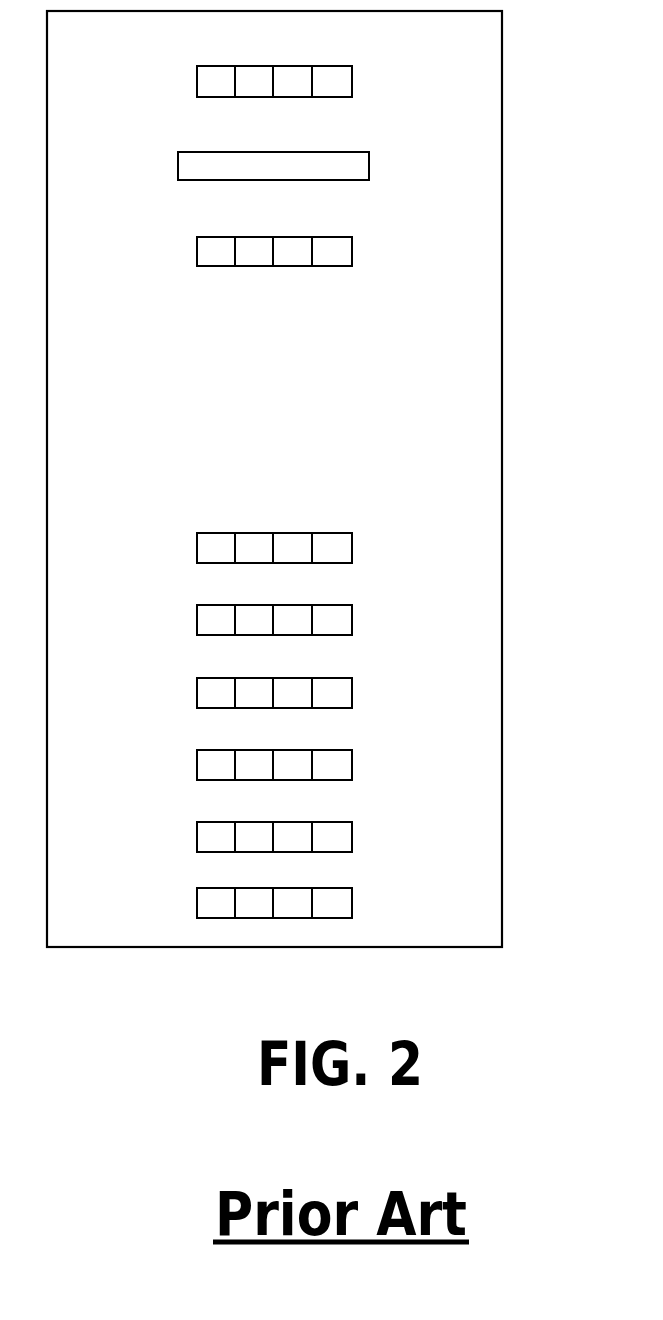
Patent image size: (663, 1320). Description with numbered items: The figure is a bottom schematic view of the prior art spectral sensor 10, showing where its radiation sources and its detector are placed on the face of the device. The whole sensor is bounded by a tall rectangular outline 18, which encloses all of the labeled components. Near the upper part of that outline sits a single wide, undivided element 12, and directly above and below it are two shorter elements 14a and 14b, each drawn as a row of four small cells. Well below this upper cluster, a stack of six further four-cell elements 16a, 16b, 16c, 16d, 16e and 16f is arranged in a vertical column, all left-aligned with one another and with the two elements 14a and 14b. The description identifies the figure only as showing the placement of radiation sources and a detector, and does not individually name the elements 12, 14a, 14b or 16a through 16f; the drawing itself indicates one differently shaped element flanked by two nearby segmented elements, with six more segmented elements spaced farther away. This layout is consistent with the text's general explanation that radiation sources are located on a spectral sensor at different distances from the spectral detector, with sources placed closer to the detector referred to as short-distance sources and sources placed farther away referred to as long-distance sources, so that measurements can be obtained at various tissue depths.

The prior art spectral sensor 10 is at (566, 174).
The controller 12 is at (193, 180).
The first memory module 14a is at (218, 66).
The second memory module 14b is at (215, 266).
The memory module 16a is at (197, 547).
The memory module 16b is at (197, 618).
The memory module 16c is at (197, 692).
The memory module 16d is at (197, 765).
The memory module 16e is at (197, 838).
The memory module 16f is at (197, 907).
The substrate / board 18 is at (502, 637).